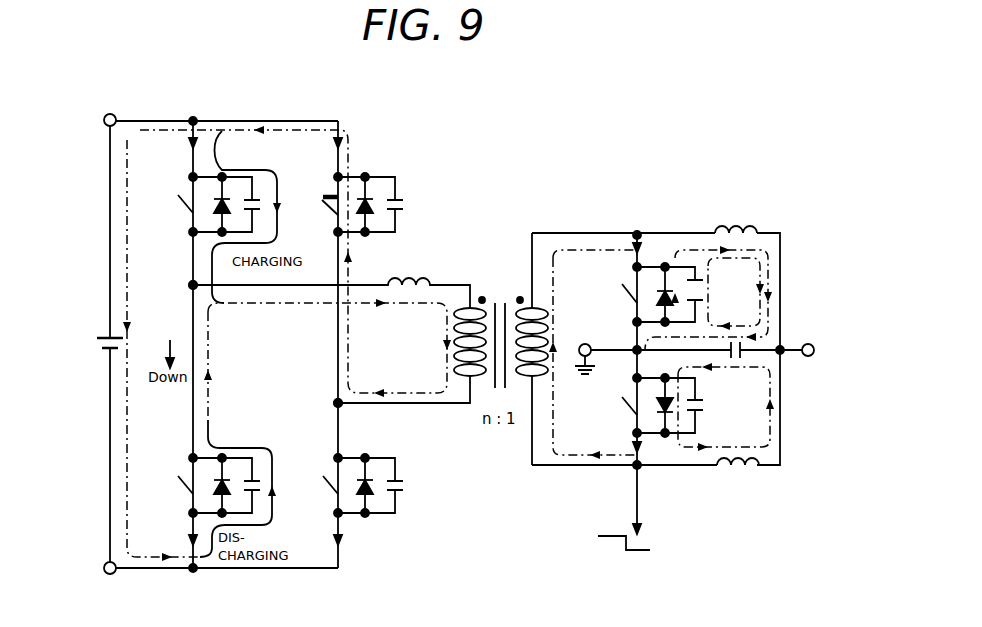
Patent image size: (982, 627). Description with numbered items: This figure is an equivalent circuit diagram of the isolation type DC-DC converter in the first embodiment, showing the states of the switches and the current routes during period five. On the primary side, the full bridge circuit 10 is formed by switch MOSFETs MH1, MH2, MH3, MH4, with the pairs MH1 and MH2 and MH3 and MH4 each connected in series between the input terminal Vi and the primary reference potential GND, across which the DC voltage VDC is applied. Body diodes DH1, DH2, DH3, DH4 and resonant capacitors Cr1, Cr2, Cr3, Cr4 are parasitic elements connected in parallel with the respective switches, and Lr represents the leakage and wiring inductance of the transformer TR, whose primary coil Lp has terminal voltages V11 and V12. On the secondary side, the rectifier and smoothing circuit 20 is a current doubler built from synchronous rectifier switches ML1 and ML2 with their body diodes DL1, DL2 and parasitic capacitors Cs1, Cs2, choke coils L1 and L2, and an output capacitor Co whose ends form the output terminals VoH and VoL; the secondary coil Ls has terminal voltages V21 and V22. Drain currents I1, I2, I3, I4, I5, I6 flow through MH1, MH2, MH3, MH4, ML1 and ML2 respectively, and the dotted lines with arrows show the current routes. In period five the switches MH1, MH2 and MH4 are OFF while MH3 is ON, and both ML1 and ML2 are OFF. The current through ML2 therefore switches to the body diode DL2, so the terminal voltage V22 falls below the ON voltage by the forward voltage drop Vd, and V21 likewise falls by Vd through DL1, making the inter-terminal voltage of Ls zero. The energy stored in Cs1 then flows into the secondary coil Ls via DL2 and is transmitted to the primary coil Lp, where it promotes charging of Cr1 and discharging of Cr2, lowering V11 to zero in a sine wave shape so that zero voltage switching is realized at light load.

The full bridge circuit 10 is at (278, 111).
The rectifier and smoothing circuit 20 is at (654, 161).
The input terminal Vi is at (106, 126).
The primary reference potential GND is at (104, 563).
The DC voltage VDC is at (104, 330).
The drain current I1 is at (182, 148).
The drain current I2 is at (182, 545).
The drain current I3 is at (327, 148).
The drain current I4 is at (327, 545).
The drain current I5 is at (646, 250).
The drain current I6 is at (646, 454).
The switch MOSFET MH1 is at (178, 204).
The switch MOSFET MH2 is at (178, 486).
The switch MOSFET MH3 is at (326, 208).
The switch MOSFET MH4 is at (326, 486).
The body diode DH1 is at (224, 200).
The body diode DH2 is at (224, 480).
The body diode DH3 is at (368, 200).
The body diode DH4 is at (370, 480).
The resonant capacitor Cr1 is at (258, 194).
The resonant capacitor Cr2 is at (262, 478).
The resonant capacitor Cr3 is at (398, 196).
The resonant capacitor Cr4 is at (400, 480).
The terminal voltage V11 is at (188, 290).
The terminal voltage V12 is at (332, 400).
The terminal voltage V21 is at (560, 214).
The terminal voltage V22 is at (534, 468).
The leakage inductor Lr is at (400, 276).
The transformer TR is at (512, 283).
The primary coil Lp is at (452, 362).
The secondary coil Ls is at (548, 310).
The synchronous rectifier switch ML1 is at (622, 292).
The synchronous rectifier switch ML2 is at (622, 405).
The body diode DL1 is at (667, 290).
The body diode DL2 is at (668, 416).
The parasitic capacitor Cs1 is at (706, 284).
The parasitic capacitor Cs2 is at (704, 412).
The output capacitor Co is at (734, 346).
The choke coil L1 is at (722, 212).
The choke coil L2 is at (734, 476).
The output terminal VoL is at (586, 344).
The output terminal VoH is at (812, 344).
The forward voltage drop Vd is at (621, 515).